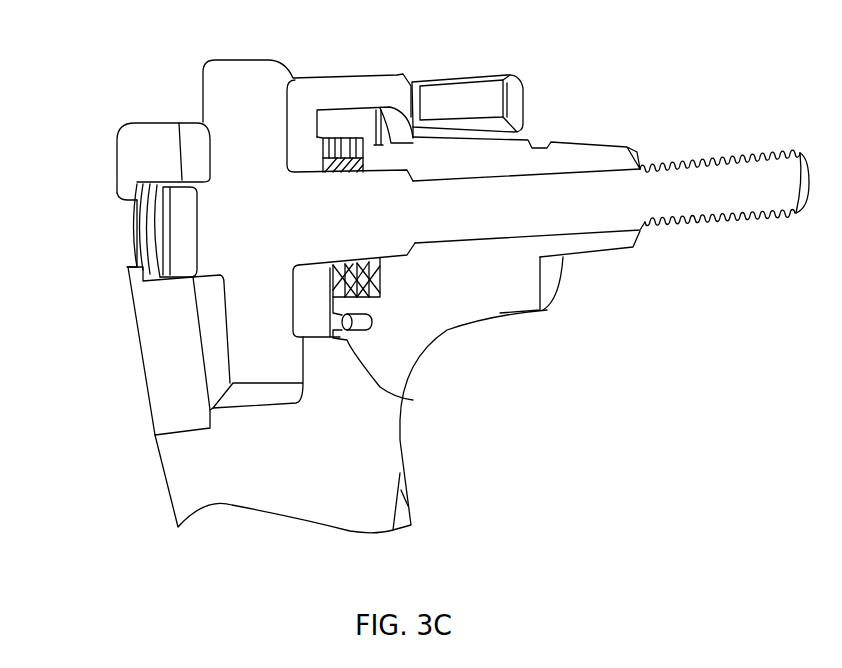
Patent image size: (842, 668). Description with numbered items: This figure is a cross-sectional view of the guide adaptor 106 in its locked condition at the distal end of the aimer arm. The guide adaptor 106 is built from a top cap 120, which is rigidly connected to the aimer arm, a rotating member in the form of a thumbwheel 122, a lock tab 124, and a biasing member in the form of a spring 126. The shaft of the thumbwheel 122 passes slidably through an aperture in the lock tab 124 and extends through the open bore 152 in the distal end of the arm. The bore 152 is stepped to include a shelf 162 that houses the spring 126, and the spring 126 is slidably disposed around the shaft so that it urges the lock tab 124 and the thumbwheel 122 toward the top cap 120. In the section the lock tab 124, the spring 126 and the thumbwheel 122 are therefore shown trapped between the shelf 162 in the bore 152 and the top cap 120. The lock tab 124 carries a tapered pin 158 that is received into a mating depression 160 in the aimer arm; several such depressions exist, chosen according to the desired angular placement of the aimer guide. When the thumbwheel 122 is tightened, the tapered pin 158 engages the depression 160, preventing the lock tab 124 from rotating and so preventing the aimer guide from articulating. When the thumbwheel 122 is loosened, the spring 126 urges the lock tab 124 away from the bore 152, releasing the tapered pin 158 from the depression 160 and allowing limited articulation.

The guide adaptor 106 is at (109, 239).
The top cap 120 is at (137, 142).
The thumbwheel 122 is at (235, 80).
The lock tab 124 is at (462, 102).
The spring 126 is at (334, 138).
The bore 152 is at (567, 253).
The tapered pin 158 is at (400, 401).
The depression 160 is at (373, 321).
The shelf 162 is at (377, 143).